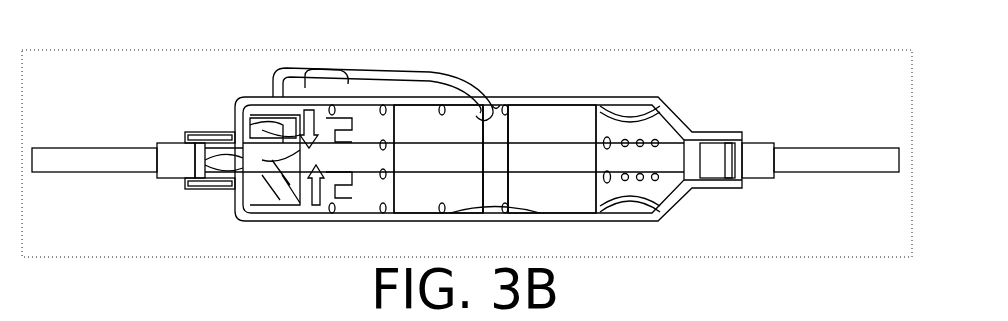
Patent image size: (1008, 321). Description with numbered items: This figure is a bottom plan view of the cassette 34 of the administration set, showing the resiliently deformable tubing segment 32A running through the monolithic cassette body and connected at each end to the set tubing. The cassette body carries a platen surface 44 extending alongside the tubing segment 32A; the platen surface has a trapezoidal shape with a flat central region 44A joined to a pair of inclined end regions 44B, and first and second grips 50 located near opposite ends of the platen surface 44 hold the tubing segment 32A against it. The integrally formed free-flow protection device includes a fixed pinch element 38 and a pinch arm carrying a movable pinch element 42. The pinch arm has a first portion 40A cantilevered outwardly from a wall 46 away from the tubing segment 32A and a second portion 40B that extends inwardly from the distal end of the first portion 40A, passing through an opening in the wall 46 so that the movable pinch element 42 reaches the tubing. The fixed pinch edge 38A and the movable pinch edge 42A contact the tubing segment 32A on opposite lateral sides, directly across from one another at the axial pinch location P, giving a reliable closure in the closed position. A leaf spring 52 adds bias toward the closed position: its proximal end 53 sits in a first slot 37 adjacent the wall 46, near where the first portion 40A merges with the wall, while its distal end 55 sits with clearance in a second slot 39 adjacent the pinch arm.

The tubing segment 32A is at (535, 155).
The cassette 34 is at (661, 61).
The first slot 37 is at (478, 115).
The fixed pinch element 38 is at (280, 140).
The fixed pinch edge 38A is at (270, 143).
The second slot 39 is at (308, 80).
The first portion 40A is at (432, 72).
The second portion 40B is at (281, 125).
The movable pinch element 42 is at (302, 195).
The movable pinch edge 42A is at (240, 165).
The platen surface 44 is at (563, 116).
The flat central region 44A is at (495, 185).
The inclined end regions 44B is at (447, 197).
The wall 46 is at (522, 97).
The grip 50 is at (607, 182).
The spring 52 is at (366, 66).
The proximal end 53 is at (476, 100).
The distal end 55 is at (333, 60).
The axial pinch location P is at (345, 152).